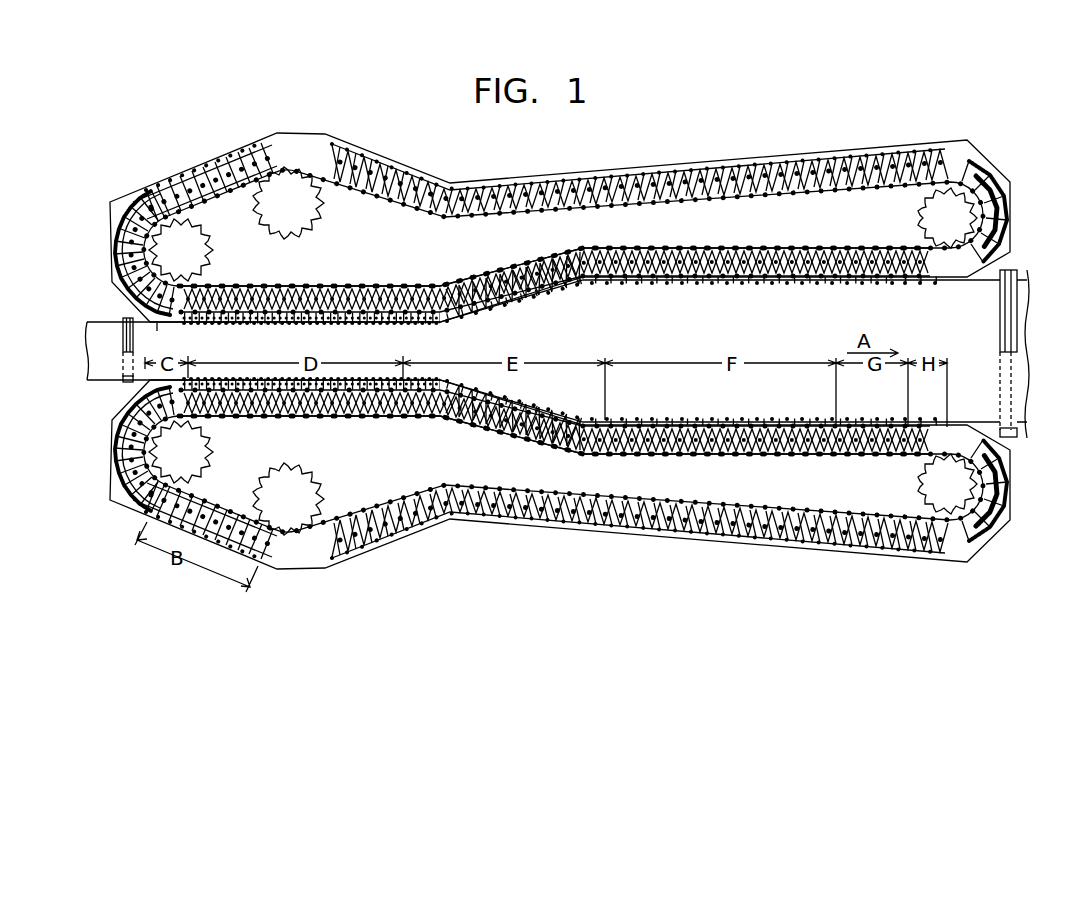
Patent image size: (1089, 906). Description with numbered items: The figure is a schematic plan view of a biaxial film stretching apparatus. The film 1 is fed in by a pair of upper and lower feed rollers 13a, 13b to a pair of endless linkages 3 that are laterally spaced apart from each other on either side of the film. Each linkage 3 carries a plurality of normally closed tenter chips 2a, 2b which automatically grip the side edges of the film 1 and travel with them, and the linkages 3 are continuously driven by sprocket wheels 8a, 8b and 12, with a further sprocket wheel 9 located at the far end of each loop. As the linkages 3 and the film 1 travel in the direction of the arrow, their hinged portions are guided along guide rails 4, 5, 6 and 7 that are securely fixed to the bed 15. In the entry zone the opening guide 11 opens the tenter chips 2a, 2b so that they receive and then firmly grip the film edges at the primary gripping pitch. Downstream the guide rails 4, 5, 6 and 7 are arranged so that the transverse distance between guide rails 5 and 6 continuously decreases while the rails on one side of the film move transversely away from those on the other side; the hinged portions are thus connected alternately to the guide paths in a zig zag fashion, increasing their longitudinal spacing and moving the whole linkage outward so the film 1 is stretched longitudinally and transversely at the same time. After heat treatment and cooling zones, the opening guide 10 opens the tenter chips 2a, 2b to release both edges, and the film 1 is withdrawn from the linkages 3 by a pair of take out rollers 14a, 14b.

The film 1 is at (98, 340).
The tenter chip 2a is at (577, 284).
The tenter chip 2b is at (612, 298).
The linkage 3 is at (856, 278).
The guide rail 4 is at (688, 248).
The guide rail 5 is at (737, 249).
The guide rail 6 is at (766, 268).
The guide rail 7 is at (713, 284).
The sprocket wheel 8a is at (212, 252).
The sprocket wheel 8b is at (212, 450).
The return sprocket 9 is at (915, 212).
The opening guide 10 is at (936, 425).
The opening guide 11 is at (158, 331).
The sprocket wheel 12 is at (310, 218).
The upper feed roller 13a is at (122, 318).
The lower feed roller 13b is at (122, 382).
The take out roller 14a is at (1018, 278).
The take out roller 14b is at (1018, 440).
The bed 15 is at (392, 537).